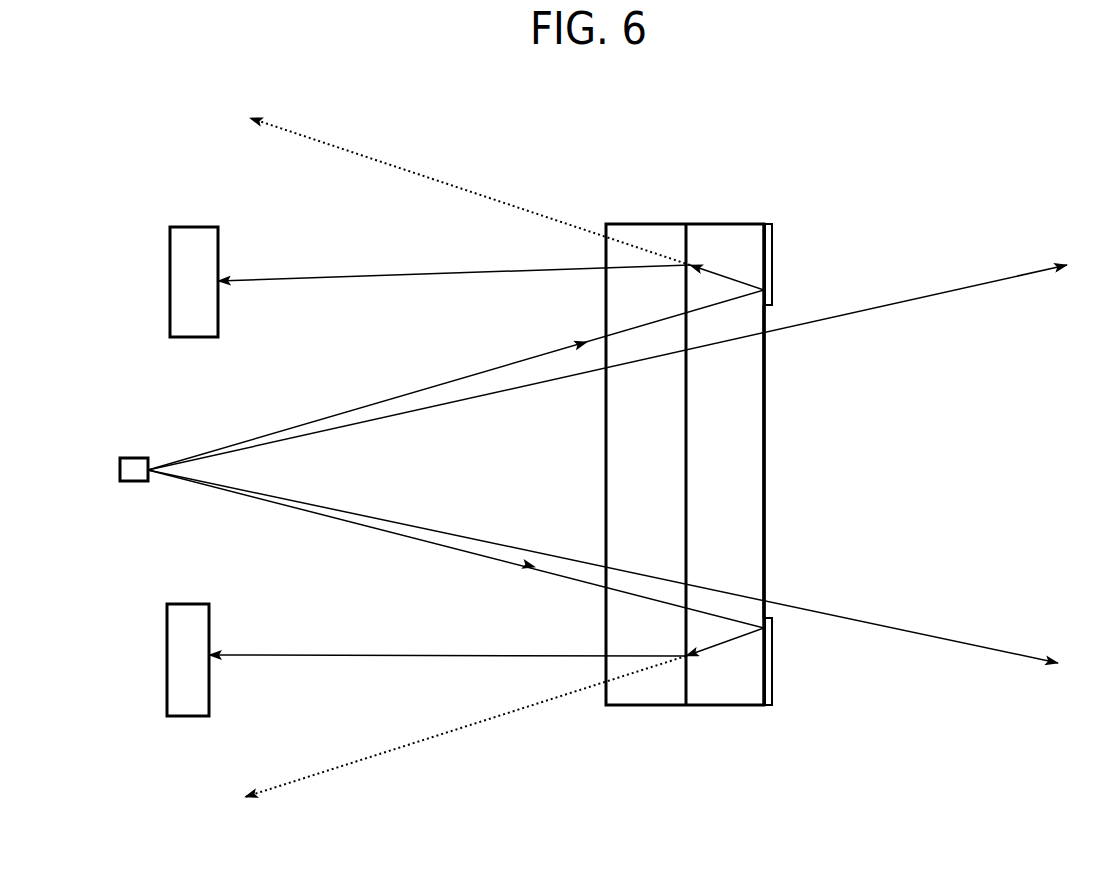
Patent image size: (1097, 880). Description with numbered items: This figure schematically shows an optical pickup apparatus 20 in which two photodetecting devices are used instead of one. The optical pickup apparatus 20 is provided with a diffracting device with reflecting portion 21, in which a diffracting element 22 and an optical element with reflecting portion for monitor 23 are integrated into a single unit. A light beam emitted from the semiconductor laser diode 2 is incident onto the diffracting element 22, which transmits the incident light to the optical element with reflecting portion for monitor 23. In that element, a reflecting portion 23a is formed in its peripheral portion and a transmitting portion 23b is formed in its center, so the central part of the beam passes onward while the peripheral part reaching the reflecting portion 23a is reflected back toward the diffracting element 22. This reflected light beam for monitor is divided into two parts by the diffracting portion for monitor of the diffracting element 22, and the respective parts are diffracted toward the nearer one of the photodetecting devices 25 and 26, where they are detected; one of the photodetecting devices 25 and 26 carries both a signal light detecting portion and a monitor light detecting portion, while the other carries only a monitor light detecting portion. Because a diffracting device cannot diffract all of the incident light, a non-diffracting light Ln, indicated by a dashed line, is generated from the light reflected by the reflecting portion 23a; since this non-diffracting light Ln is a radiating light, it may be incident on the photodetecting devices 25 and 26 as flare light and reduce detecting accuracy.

The optical pickup apparatus 20 is at (821, 375).
The diffracting device with reflecting portion 21 is at (728, 390).
The diffracting element 22 is at (637, 224).
The optical element with reflecting portion for monitor 23 is at (727, 224).
The reflecting portion 23a is at (773, 258).
The transmitting portion 23b is at (766, 475).
The photodetecting device 25 is at (170, 295).
The photodetecting device 26 is at (167, 658).
The semiconductor laser diode 2 is at (120, 470).
The non-diffracting light Ln is at (385, 163).